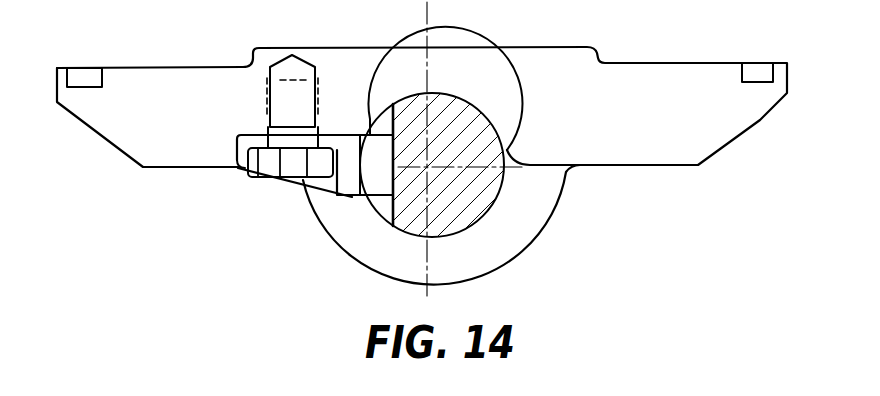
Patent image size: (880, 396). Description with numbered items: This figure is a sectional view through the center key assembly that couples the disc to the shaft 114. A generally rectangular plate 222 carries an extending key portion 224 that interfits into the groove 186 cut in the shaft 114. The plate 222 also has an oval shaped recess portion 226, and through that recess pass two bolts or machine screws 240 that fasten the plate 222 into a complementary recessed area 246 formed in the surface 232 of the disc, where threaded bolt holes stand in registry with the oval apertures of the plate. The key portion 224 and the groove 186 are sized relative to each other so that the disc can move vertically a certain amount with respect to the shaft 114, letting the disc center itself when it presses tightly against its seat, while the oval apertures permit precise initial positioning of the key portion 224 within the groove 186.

The shaft 114 is at (457, 118).
The groove 186 is at (383, 132).
The plate 222 is at (348, 185).
The key portion 224 is at (370, 133).
The recess portion 226 is at (331, 137).
The surface 232 is at (162, 170).
The bolts 240 is at (282, 178).
The recessed area 246 is at (245, 164).